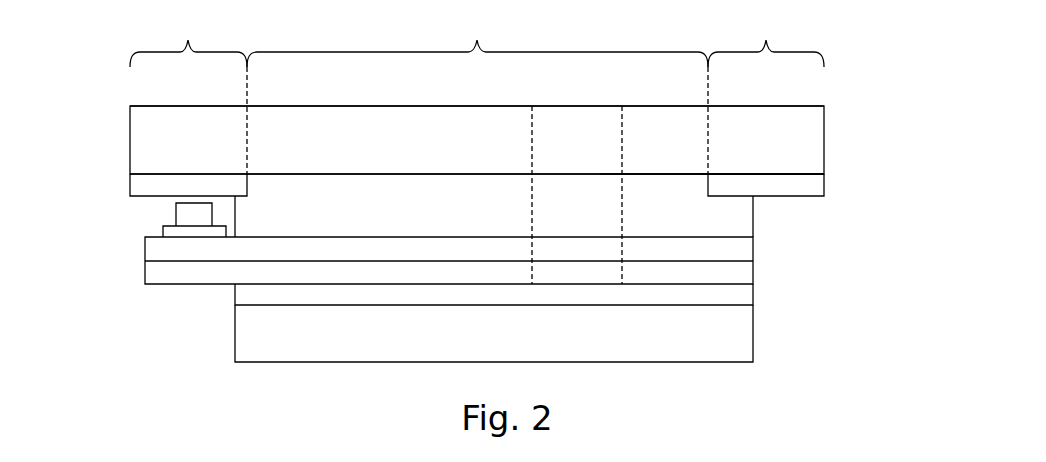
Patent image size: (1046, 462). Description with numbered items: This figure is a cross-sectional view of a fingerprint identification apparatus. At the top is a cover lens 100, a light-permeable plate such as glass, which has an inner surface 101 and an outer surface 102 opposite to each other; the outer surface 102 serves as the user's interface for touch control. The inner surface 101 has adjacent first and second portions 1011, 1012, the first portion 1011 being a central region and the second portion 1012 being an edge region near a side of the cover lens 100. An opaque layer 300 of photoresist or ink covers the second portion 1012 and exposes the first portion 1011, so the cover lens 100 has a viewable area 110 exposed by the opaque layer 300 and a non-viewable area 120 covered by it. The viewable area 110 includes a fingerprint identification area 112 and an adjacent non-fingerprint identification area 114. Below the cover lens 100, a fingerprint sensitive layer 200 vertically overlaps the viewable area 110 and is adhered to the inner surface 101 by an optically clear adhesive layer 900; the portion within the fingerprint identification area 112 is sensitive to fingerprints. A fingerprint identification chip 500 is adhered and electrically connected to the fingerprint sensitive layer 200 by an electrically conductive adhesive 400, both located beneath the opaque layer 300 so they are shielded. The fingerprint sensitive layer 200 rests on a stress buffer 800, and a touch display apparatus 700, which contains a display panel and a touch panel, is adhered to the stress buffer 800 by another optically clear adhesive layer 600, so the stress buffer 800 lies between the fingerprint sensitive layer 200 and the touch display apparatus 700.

The cover lens 100 is at (153, 147).
The inner surface 101 is at (908, 105).
The first portion 1011 is at (668, 174).
The second portion 1012 is at (765, 174).
The outer surface 102 is at (762, 106).
The viewable area 110 is at (477, 38).
The fingerprint identification area 112 is at (575, 147).
The non-fingerprint identification area 114 is at (662, 147).
The non-viewable area 120 is at (477, 91).
The fingerprint sensitive layer 200 is at (152, 248).
The opaque layer 300 is at (153, 182).
The electrically conductive adhesive 400 is at (157, 231).
The fingerprint identification chip 500 is at (190, 211).
The optically clear adhesive layer 600 is at (732, 291).
The touch display apparatus 700 is at (732, 323).
The stress buffer 800 is at (157, 277).
The optically clear adhesive layer 900 is at (737, 206).